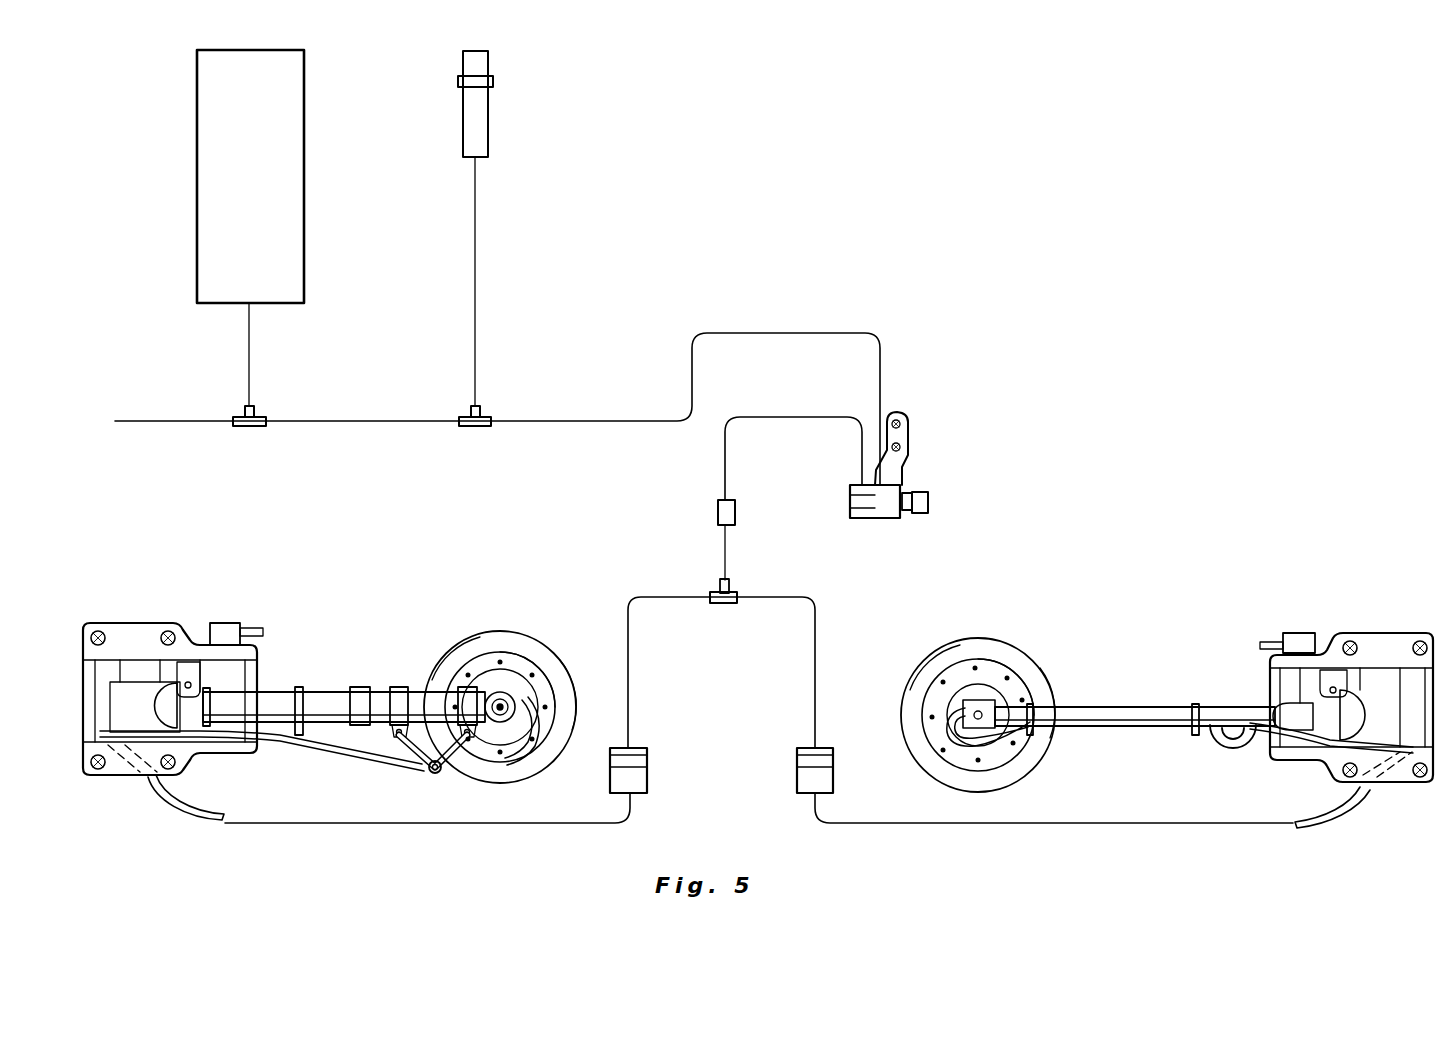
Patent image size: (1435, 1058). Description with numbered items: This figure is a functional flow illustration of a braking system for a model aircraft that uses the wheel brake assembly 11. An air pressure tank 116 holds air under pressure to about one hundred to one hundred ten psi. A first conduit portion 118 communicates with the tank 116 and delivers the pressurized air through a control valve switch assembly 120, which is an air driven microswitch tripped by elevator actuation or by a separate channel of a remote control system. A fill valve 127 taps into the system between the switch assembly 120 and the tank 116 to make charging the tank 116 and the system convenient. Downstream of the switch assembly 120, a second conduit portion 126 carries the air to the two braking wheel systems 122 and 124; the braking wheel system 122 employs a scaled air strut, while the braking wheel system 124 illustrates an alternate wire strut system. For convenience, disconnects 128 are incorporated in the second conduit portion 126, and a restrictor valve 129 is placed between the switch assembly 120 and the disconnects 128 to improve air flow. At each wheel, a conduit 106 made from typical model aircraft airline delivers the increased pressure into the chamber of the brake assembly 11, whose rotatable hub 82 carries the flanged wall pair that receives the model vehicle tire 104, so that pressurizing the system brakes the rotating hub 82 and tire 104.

The wheel brake assembly 11 is at (541, 692).
The rotatable hub 82 is at (545, 722).
The model vehicle tire 104 is at (503, 768).
The conduit 106 is at (520, 736).
The air pressure tank 116 is at (284, 148).
The first conduit portion 118 is at (356, 398).
The control valve switch assembly 120 is at (908, 443).
The braking wheel system 122 is at (323, 658).
The braking wheel system 124 is at (1136, 665).
The second conduit portion 126 is at (628, 650).
The fill valve 127 is at (490, 120).
The disconnects 128 is at (803, 777).
The restrictor valve 129 is at (717, 508).